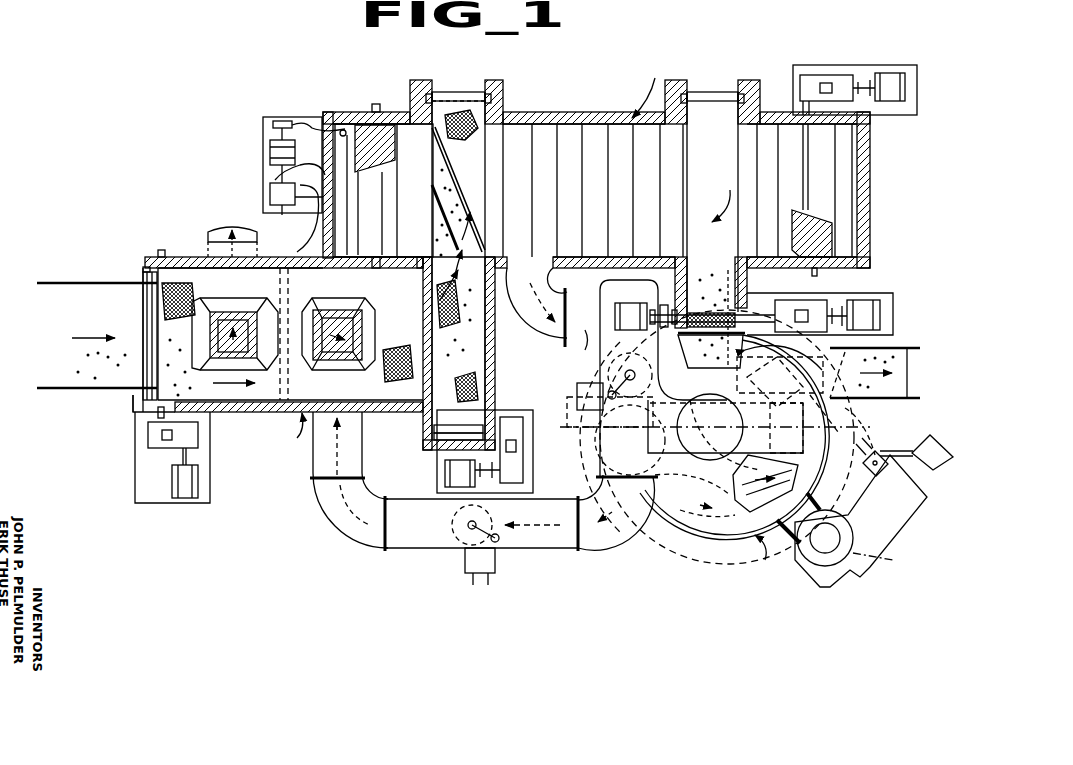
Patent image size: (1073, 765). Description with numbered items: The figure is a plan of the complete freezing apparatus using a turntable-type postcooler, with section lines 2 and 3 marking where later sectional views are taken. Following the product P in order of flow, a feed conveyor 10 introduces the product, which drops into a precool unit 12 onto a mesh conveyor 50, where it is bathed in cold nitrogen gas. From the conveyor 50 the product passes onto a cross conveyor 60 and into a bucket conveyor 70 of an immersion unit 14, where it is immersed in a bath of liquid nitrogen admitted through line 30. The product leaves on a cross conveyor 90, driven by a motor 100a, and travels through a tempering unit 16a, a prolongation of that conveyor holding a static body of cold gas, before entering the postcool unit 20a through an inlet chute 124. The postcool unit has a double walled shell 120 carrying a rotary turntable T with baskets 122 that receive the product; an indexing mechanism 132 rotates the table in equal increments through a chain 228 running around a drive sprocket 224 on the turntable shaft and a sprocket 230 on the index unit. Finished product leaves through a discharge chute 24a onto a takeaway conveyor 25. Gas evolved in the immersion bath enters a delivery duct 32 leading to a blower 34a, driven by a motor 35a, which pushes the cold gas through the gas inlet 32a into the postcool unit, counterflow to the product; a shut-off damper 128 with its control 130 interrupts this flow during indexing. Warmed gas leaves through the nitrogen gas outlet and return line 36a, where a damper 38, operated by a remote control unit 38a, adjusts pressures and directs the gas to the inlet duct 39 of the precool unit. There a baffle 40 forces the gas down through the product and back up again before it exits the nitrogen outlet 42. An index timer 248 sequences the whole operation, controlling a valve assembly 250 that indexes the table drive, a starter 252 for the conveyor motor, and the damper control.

The feed conveyor 10 is at (72, 375).
The precool unit 12 is at (130, 408).
The immersion unit 14 is at (560, 122).
The tempering unit 16a is at (746, 286).
The postcool unit 20a is at (682, 545).
The discharge chute 24a is at (832, 402).
The takeaway conveyor 25 is at (915, 355).
The liquid nitrogen line 30 is at (268, 185).
The delivery duct 32 is at (553, 333).
The gas inlet 32a is at (615, 442).
The blower 34a is at (628, 366).
The motor 35a is at (628, 310).
The nitrogen gas outlet and return line 36a is at (512, 548).
The damper 38 is at (466, 522).
The remote control unit 38a is at (495, 573).
The nitrogen gas inlet duct 39 is at (338, 347).
The baffle 40 is at (290, 292).
The nitrogen outlet 42 is at (215, 330).
The mesh conveyor 50 is at (185, 270).
The cross conveyor 60 is at (478, 298).
The bucket conveyor 70 is at (524, 142).
The cross conveyor 90 is at (710, 100).
The motor 100a is at (880, 305).
The double walled frame or shell 120 is at (783, 540).
The baskets 122 is at (798, 480).
The inlet chute 124 is at (829, 373).
The shut-off damper 128 is at (625, 375).
The control 130 is at (582, 395).
The indexing mechanism 132 is at (903, 523).
The drive sprocket 224 is at (705, 435).
The chain 228 is at (792, 553).
The sprocket 230 is at (889, 570).
The index timer 248 is at (884, 475).
The valve assembly 250 is at (945, 451).
The starter 252 is at (870, 318).
The product P is at (890, 388).
The rotary turntable T is at (795, 498).
The section line 2— 2 is at (727, 248).
The section line 3— 3 is at (690, 397).